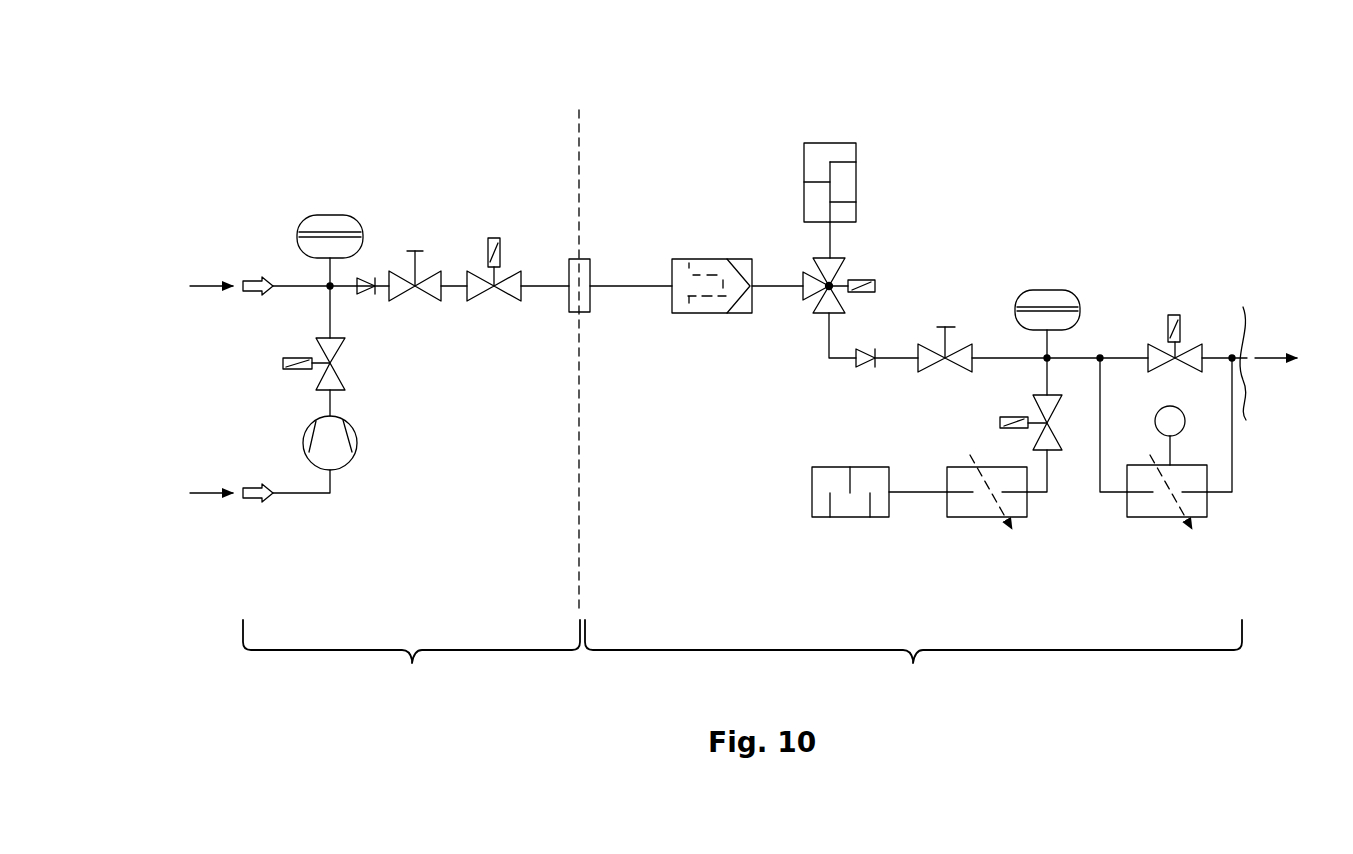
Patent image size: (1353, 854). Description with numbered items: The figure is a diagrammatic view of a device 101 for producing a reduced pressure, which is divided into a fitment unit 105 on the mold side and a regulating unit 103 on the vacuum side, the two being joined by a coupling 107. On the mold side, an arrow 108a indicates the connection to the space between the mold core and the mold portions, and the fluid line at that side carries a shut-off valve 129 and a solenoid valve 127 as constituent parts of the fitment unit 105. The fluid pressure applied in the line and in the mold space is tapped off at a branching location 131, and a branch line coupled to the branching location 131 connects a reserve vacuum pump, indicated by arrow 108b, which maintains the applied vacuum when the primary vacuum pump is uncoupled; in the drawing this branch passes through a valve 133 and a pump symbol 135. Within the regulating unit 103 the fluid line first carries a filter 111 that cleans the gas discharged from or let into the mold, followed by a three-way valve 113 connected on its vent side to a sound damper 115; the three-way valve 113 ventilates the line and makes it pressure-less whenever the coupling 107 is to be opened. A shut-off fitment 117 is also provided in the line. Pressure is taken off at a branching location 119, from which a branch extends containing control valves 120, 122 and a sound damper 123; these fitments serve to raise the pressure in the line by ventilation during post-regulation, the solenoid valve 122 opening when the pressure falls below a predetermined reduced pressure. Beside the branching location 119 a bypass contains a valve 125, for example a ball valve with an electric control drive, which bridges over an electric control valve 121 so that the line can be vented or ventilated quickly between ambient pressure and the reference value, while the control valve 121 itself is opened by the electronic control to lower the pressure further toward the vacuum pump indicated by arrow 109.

The device for producing a reduced pressure 101 is at (966, 74).
The regulating unit 103 is at (913, 657).
The fitment unit 105 is at (411, 657).
The coupling 107 is at (583, 262).
The connection to the space between the mold core and the mold portions 108a is at (211, 285).
The reserve vacuum pump 108b is at (211, 492).
The vacuum pump 109 is at (1268, 348).
The filter 111 is at (718, 258).
The three-way valve 113 is at (849, 267).
The sound damper 115 is at (834, 140).
The shut-off fitment 117 is at (950, 325).
The branching location 119 is at (1059, 353).
The control valve 120 is at (1055, 451).
The electric control valve 121 is at (1200, 518).
The solenoid valve 122 is at (981, 518).
The sound damper 123 is at (860, 518).
The bypass valve 125 is at (1184, 350).
The solenoid valve 127 is at (512, 272).
The shut-off valve 129 is at (432, 272).
The branching location 131 is at (322, 280).
The solenoid valve 133 is at (313, 349).
The pump 135 is at (358, 432).